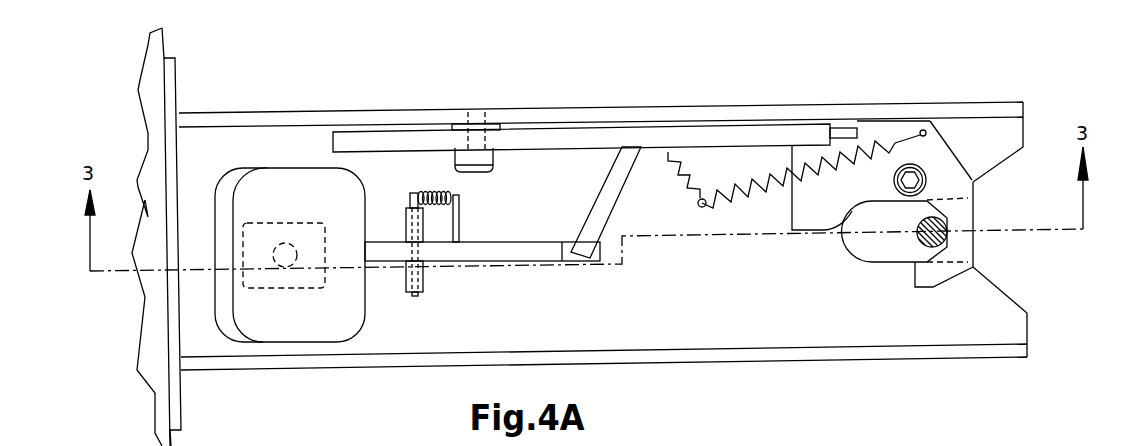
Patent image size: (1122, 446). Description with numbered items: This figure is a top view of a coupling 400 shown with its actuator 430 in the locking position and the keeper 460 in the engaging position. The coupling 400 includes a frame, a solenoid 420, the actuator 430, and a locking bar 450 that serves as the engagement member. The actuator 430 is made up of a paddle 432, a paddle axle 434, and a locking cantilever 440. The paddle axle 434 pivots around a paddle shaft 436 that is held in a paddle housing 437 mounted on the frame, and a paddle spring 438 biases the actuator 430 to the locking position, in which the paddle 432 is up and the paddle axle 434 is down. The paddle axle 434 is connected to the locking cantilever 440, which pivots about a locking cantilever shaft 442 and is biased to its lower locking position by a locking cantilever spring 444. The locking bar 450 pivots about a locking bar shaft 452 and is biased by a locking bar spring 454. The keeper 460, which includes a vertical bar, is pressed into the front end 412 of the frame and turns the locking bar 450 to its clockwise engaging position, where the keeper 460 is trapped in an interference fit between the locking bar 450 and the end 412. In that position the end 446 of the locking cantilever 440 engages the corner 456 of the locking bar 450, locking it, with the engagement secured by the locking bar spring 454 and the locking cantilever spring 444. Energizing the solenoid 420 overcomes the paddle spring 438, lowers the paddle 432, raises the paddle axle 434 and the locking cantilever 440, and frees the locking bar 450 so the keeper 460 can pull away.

The coupling 400 is at (645, 38).
The end of frame 412 is at (867, 263).
The solenoid 420 is at (268, 282).
The actuator 430 is at (537, 250).
The paddle 432 is at (293, 207).
The paddle axle 434 is at (495, 255).
The paddle shaft 436 is at (417, 297).
The paddle housing 437 is at (405, 282).
The paddle spring 438 is at (458, 220).
The locking cantilever 440 is at (225, 157).
The locking cantilever shaft 442 is at (478, 162).
The locking cantilever spring 444 is at (698, 167).
The end of locking cantilever 446 is at (813, 133).
The locking bar 450 is at (937, 153).
The locking bar shaft 452 is at (913, 168).
The locking bar spring 454 is at (775, 185).
The corner of locking bar 456 is at (847, 137).
The keeper 460 is at (965, 255).